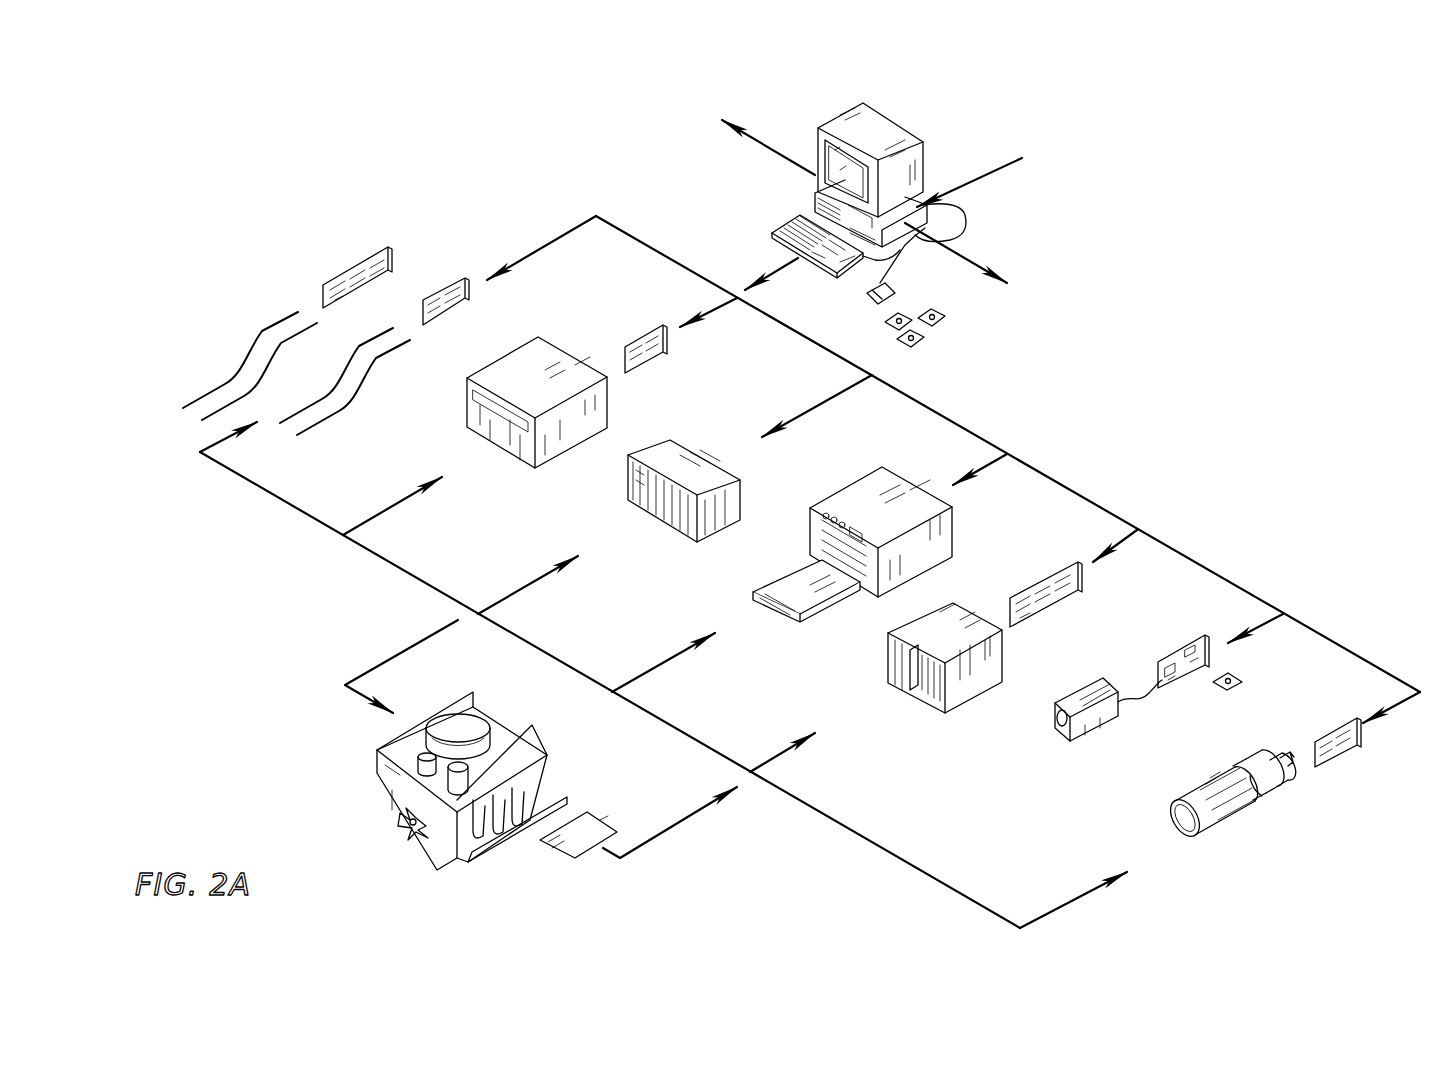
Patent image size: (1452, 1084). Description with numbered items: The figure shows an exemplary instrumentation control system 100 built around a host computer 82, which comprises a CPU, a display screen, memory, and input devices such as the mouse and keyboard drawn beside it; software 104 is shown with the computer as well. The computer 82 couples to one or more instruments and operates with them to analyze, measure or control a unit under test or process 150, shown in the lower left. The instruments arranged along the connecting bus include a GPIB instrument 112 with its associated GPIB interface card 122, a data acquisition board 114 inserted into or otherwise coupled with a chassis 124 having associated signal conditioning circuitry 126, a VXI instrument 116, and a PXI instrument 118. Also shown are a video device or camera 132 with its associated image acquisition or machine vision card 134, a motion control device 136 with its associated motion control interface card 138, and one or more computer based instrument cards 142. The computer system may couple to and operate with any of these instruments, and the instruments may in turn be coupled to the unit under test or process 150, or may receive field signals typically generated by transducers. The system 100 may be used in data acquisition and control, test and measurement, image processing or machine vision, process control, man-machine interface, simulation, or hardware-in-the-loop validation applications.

The host computer 82 is at (892, 128).
The instrumentation control system 100 is at (1182, 292).
The software 104 is at (923, 340).
The GPIB instrument 112 is at (495, 370).
The data acquisition board 114 is at (1062, 637).
The VXI instrument 116 is at (850, 492).
The PXI instrument 118 is at (662, 525).
The GPIB interface card 122 is at (637, 335).
The chassis 124 is at (914, 681).
The signal conditioning circuitry 126 is at (915, 693).
The video device or camera 132 is at (1098, 730).
The image acquisition card 134 is at (1173, 650).
The motion control device 136 is at (1225, 820).
The motion control interface card 138 is at (1340, 758).
The computer based instrument cards 142 is at (340, 273).
The unit under test or process 150 is at (383, 807).